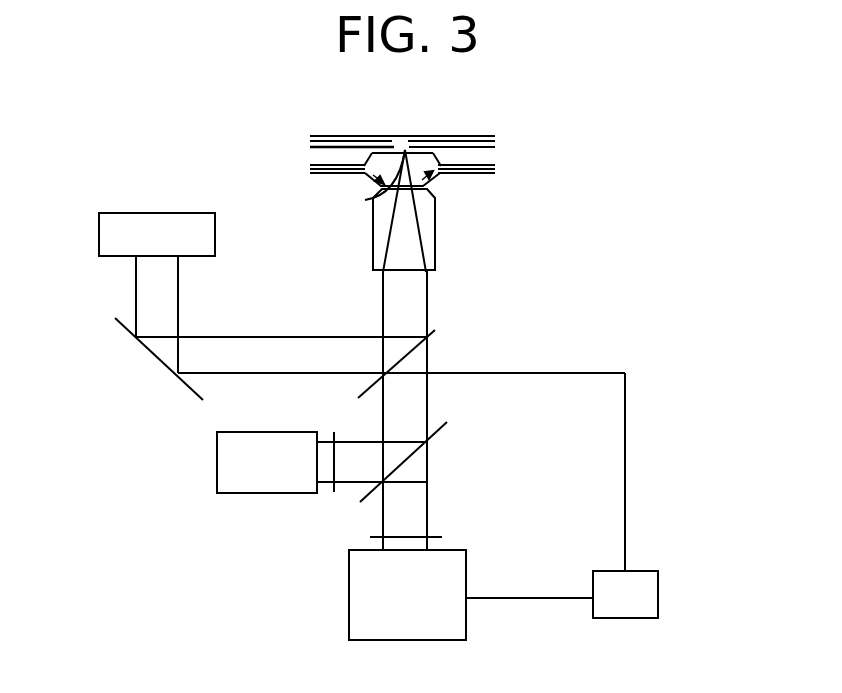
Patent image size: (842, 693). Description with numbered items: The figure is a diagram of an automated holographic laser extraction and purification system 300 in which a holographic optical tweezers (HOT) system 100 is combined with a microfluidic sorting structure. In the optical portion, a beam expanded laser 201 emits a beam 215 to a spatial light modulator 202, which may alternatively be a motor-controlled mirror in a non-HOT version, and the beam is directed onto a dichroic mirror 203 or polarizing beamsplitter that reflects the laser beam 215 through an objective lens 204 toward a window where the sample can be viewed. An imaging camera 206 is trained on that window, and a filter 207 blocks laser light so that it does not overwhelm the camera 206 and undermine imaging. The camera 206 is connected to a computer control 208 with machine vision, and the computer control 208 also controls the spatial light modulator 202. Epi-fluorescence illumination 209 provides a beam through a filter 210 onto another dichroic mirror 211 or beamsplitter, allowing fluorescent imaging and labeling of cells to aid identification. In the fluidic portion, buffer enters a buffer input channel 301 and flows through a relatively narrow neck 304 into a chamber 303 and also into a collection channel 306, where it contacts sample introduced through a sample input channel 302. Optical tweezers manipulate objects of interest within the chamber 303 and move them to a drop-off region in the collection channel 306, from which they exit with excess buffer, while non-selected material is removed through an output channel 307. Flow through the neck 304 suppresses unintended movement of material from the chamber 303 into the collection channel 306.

The HOT system 100 is at (655, 409).
The beam expanded laser 201 is at (150, 213).
The spatial light modulator 202 is at (150, 353).
The dichroic mirror 203 is at (265, 285).
The objective lens 204 is at (437, 233).
The imaging camera 206 is at (349, 597).
The filter 207 is at (432, 534).
The computer control 208 is at (660, 592).
The epi-fluorescence illumination 209 is at (217, 462).
The filter 210 is at (334, 433).
The dichroic mirror 211 is at (393, 474).
The beam 215 is at (180, 287).
The automated extraction and purification system 300 is at (568, 141).
The buffer input channel 301 is at (351, 138).
The sample input channel 302 is at (322, 174).
The chamber 303 is at (438, 183).
The neck 304 is at (393, 147).
The collection channel 306 is at (455, 135).
The output channel 307 is at (485, 177).